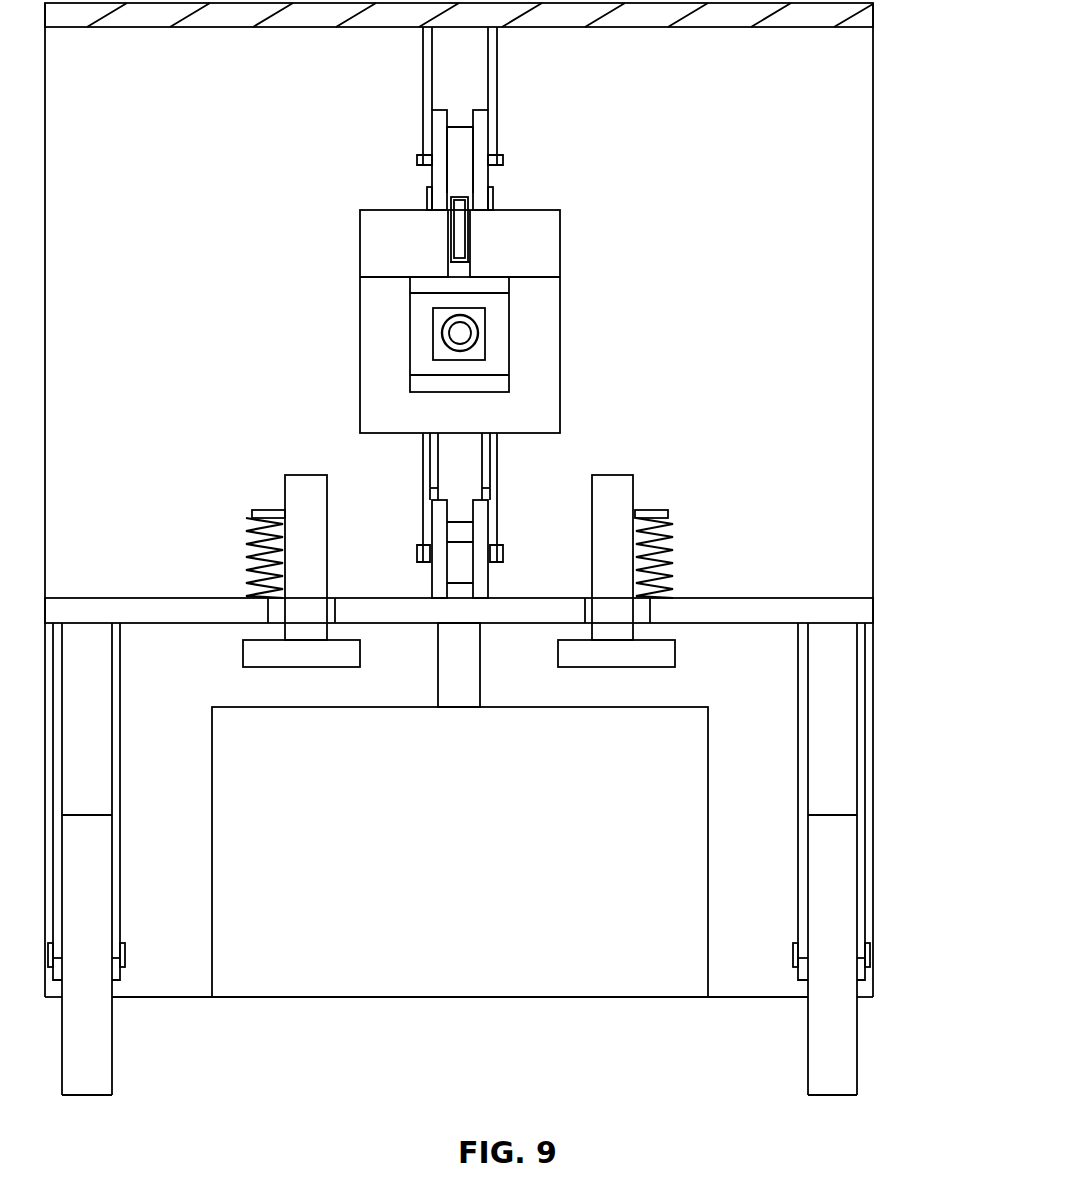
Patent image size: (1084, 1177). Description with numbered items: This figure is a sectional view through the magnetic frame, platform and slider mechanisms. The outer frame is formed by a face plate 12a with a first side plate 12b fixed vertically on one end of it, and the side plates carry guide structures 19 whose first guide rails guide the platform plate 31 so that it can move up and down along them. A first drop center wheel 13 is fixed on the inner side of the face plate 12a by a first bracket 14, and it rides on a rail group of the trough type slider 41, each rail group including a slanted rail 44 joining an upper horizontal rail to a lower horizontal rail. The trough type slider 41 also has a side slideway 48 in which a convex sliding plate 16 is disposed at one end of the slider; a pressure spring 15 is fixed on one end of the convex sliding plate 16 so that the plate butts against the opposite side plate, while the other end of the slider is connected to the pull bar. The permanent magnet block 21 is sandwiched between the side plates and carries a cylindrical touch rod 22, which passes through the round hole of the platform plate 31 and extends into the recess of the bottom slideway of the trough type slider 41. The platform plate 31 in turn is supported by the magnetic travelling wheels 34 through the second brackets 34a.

The face plate 12a is at (243, 14).
The first side plate 12b is at (837, 223).
The first drop center wheel 13 is at (438, 182).
The first bracket 14 is at (492, 68).
The pressure spring 15 is at (473, 347).
The convex sliding plate 16 is at (425, 330).
The guide structure 19 is at (200, 489).
The permanent magnet block 21 is at (425, 960).
The cylindrical touch rod 22 is at (460, 680).
The platform plate 31 is at (848, 617).
The magnetic travelling wheel 34 is at (93, 1057).
The second bracket 34a is at (865, 792).
The trough type slider 41 is at (358, 290).
The slanted rail 44 is at (460, 233).
The side slideway 48 is at (487, 283).